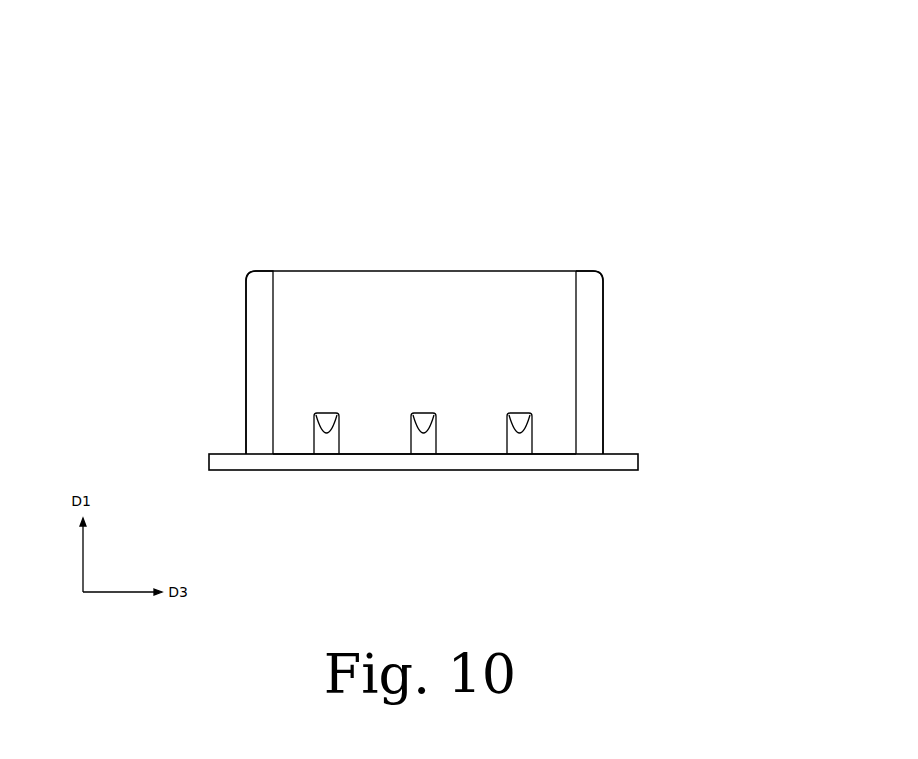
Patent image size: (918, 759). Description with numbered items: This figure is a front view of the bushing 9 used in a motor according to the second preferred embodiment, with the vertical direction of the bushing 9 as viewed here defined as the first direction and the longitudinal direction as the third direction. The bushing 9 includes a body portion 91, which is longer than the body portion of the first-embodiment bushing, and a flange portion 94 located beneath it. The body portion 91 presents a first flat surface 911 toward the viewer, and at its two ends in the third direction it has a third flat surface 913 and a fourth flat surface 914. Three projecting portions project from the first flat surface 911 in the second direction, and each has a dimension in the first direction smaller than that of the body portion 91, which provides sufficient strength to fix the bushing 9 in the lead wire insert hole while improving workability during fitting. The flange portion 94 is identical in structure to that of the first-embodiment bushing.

The bushing 9 is at (437, 318).
The body portion 91 is at (430, 358).
The first flat surface 911 is at (293, 424).
The third flat surface 913 is at (246, 321).
The fourth flat surface 914 is at (603, 335).
The flange portion 94 is at (640, 462).